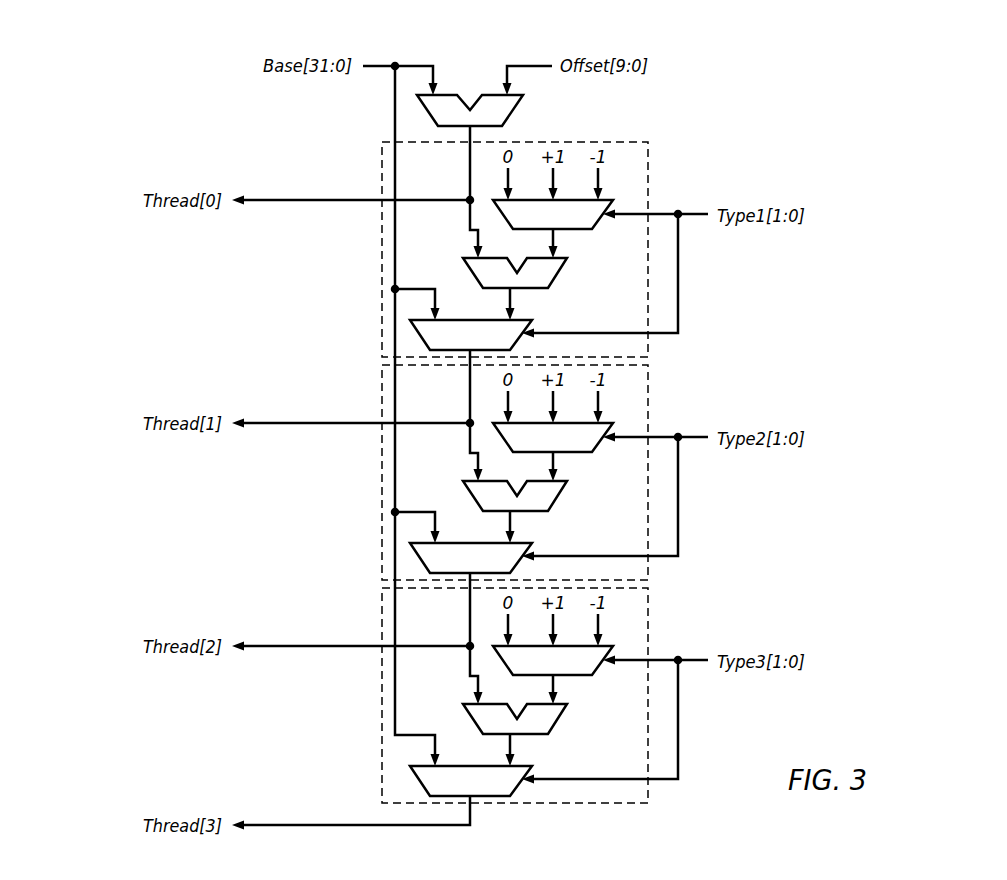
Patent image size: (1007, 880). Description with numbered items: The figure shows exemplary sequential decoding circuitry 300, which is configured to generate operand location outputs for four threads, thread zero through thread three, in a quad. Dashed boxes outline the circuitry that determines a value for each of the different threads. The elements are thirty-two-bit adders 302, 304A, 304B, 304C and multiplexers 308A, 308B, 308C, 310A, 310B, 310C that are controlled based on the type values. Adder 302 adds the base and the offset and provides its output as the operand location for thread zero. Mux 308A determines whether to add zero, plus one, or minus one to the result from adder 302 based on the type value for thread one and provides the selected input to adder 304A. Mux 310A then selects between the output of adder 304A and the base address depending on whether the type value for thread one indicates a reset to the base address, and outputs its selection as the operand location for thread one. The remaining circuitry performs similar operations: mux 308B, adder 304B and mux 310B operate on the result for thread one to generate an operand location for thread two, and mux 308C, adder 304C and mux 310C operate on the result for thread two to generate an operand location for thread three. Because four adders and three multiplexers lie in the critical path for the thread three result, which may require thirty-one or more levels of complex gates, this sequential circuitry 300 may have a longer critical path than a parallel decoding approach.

The sequential decoding circuitry 300 is at (910, 178).
The adder 302 is at (486, 110).
The adder 304A is at (538, 273).
The adder 304B is at (538, 496).
The adder 304C is at (538, 719).
The multiplexer 308A is at (553, 214).
The multiplexer 308B is at (553, 437).
The multiplexer 308C is at (553, 660).
The multiplexer 310A is at (471, 335).
The multiplexer 310B is at (471, 558).
The multiplexer 310C is at (471, 781).